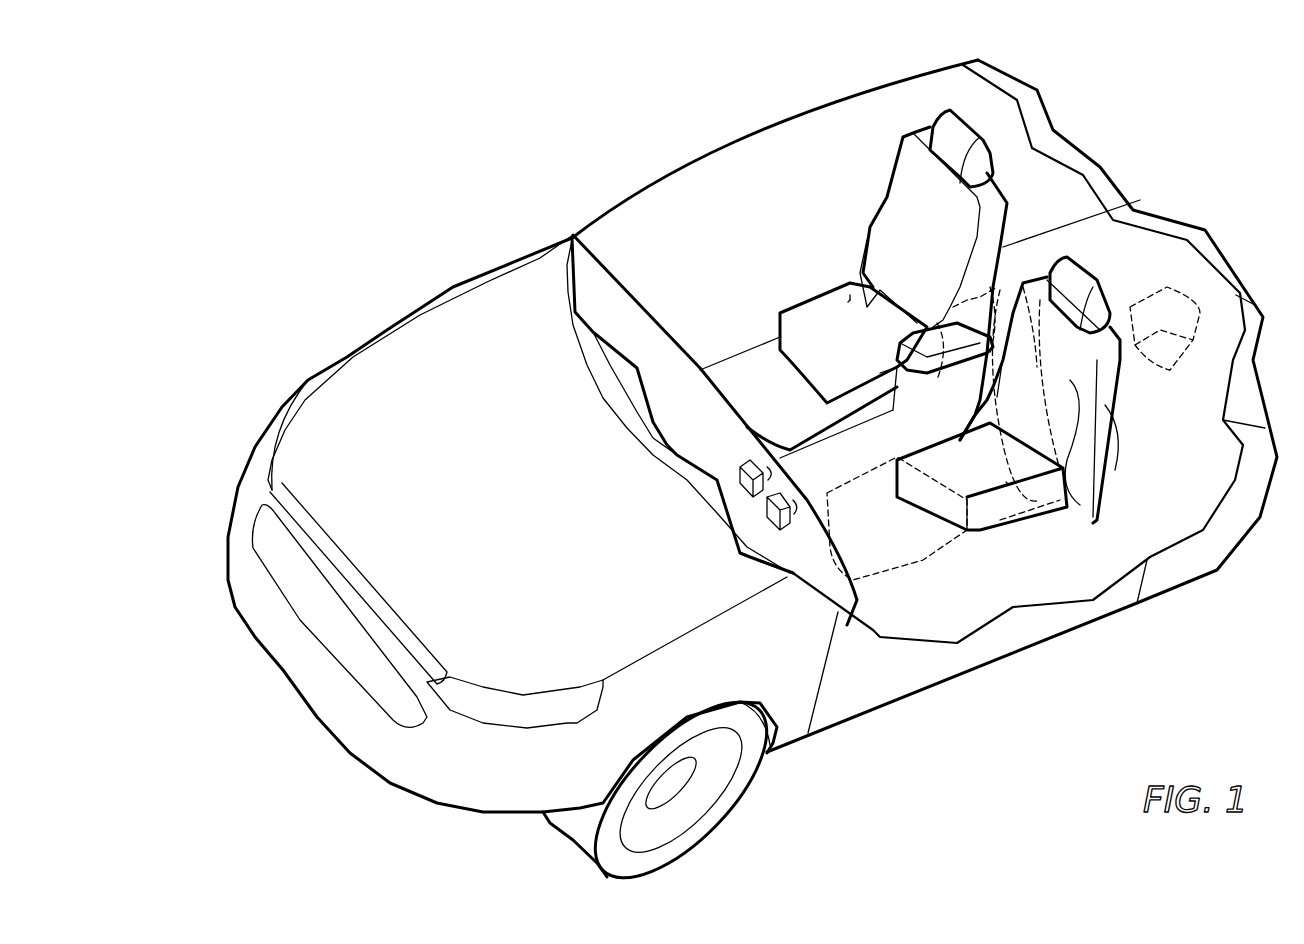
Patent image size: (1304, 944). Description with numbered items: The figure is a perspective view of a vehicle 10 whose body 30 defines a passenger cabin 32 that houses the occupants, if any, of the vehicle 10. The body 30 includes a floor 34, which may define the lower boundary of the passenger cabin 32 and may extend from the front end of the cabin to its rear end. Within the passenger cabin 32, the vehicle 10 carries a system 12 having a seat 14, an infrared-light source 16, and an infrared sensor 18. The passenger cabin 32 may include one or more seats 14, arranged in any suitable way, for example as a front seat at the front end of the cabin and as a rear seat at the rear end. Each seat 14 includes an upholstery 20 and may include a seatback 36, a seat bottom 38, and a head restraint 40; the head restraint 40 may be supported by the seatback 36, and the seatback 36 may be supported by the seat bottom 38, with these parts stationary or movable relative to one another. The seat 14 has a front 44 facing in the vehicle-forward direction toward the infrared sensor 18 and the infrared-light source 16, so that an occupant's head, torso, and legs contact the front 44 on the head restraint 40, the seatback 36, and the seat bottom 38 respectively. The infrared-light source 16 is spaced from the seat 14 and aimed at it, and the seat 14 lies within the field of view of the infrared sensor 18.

The vehicle 10 is at (500, 127).
The system 12 is at (681, 500).
The seat 14 is at (1047, 273).
The infrared-light source 16 is at (767, 523).
The infrared sensor 18 is at (747, 487).
The upholstery 20 is at (922, 194).
The body 30 is at (455, 290).
The passenger cabin 32 is at (755, 185).
The floor 34 is at (937, 612).
The seatback 36 is at (888, 192).
The seat bottom 38 is at (820, 290).
The head restraint 40 is at (963, 140).
The front 44 is at (900, 235).